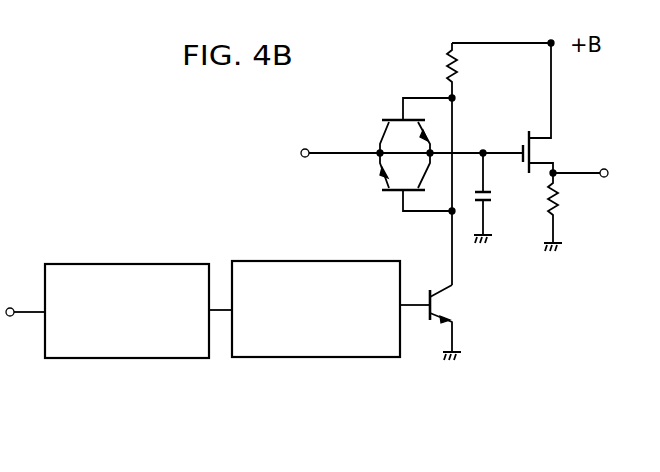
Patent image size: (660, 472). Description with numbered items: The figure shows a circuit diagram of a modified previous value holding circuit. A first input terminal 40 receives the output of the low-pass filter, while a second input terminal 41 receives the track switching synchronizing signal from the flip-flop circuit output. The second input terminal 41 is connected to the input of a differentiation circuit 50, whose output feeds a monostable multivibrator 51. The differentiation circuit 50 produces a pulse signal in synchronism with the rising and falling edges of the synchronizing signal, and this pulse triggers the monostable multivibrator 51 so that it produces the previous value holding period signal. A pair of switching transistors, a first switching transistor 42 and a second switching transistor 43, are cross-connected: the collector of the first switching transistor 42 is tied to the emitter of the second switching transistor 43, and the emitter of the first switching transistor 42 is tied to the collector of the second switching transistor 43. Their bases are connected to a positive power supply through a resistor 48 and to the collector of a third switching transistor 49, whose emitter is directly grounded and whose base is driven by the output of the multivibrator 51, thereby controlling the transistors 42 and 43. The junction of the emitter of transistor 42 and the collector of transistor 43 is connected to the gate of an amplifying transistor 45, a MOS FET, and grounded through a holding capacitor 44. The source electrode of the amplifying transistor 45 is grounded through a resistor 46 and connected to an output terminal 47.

The first input terminal 40 is at (306, 157).
The second input terminal 41 is at (11, 316).
The first switching transistor 42 is at (394, 117).
The second switching transistor 43 is at (399, 192).
The holding capacitor 44 is at (492, 197).
The amplifying transistor 45 is at (523, 143).
The resistor 46 is at (559, 200).
The output terminal 47 is at (606, 178).
The resistor 48 is at (459, 62).
The third switching transistor 49 is at (446, 298).
The differentiation circuit 50 is at (165, 264).
The monostable multivibrator 51 is at (318, 261).